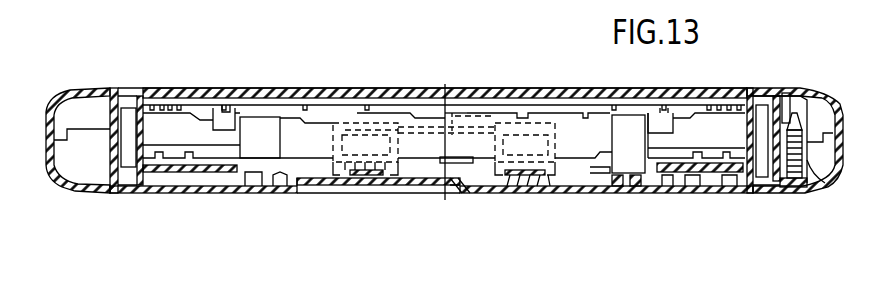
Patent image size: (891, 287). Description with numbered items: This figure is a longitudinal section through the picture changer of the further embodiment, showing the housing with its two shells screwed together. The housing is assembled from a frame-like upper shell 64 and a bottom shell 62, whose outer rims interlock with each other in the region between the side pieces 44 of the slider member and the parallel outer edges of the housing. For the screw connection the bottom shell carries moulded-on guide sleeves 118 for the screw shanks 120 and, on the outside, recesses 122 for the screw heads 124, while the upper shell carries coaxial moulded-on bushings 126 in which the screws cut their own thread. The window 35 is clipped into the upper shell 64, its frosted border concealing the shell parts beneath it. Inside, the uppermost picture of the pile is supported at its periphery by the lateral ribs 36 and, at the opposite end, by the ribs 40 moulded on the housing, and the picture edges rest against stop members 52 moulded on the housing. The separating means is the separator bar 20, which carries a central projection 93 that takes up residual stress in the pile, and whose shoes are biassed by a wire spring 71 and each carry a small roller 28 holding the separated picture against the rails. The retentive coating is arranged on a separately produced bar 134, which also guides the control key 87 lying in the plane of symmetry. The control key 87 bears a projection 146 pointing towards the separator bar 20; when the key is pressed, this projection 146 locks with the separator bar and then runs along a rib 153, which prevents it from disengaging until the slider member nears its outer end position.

The separator bar 20 is at (313, 122).
The roller 28 is at (556, 148).
The window 35 is at (380, 97).
The lateral ribs 36 is at (168, 105).
The ribs 40 is at (520, 113).
The side pieces 44 is at (133, 145).
The stop members 52 is at (220, 112).
The bottom shell 62 is at (80, 192).
The upper shell 64 is at (76, 90).
The wire spring 71 is at (463, 123).
The control key 87 is at (397, 185).
The projection 93 is at (418, 112).
The guide sleeves 118 is at (820, 145).
The screw shanks 120 is at (812, 165).
The recesses 122 is at (790, 186).
The screw heads 124 is at (803, 188).
The bushings 126 is at (818, 93).
The bar 134 is at (337, 175).
The projection 146 is at (462, 188).
The rib 153 is at (452, 185).